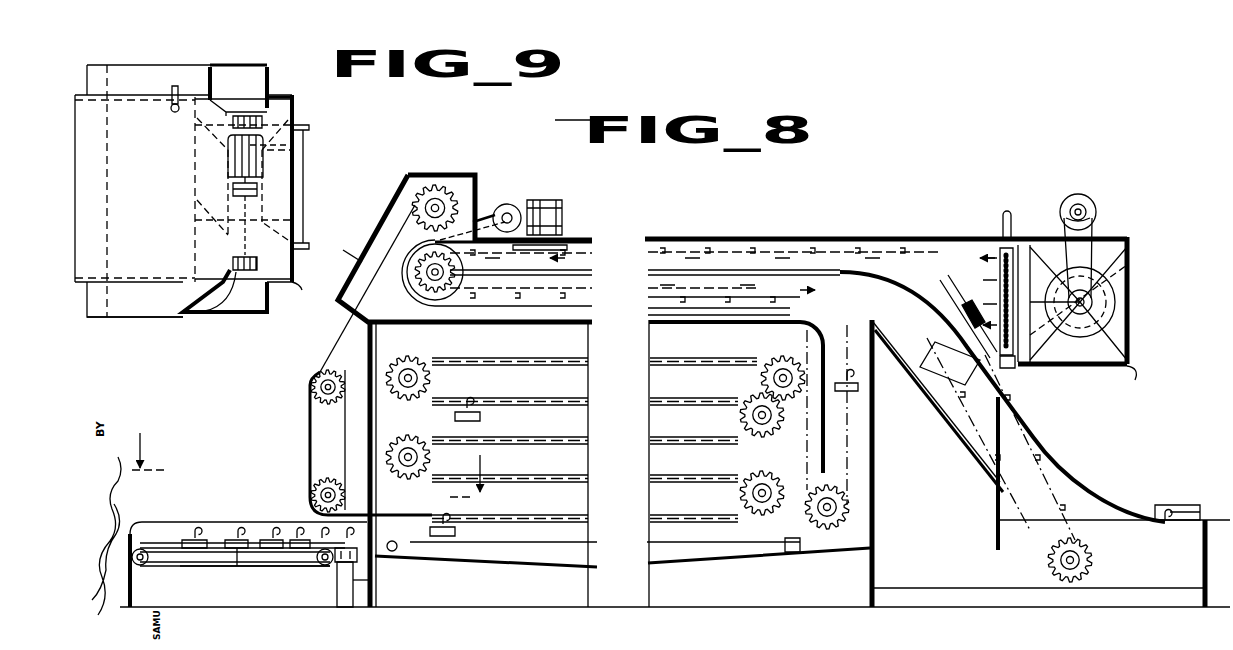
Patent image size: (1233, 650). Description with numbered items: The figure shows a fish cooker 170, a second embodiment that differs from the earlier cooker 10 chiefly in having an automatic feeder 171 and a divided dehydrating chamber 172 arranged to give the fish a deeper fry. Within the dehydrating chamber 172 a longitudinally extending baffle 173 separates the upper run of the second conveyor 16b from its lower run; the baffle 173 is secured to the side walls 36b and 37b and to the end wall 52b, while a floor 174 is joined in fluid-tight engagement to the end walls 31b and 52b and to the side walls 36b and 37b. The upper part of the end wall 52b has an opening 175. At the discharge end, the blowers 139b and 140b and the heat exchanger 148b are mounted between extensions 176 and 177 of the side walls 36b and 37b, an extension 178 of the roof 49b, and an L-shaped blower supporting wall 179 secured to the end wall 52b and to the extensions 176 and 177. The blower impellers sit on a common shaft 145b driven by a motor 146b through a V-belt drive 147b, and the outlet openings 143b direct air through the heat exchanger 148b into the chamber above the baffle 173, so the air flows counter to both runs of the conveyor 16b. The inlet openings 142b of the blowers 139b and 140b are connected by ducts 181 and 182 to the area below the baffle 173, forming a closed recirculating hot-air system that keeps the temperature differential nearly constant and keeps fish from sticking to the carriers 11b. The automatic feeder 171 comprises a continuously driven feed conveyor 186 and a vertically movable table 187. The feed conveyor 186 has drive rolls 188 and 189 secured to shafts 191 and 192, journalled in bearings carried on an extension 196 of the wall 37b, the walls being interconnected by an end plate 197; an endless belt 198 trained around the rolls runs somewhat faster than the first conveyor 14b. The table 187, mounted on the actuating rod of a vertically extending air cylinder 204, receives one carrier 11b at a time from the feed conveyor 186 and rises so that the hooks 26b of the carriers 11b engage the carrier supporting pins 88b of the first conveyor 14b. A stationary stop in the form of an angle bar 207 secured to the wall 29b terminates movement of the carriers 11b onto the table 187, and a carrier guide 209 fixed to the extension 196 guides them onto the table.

In FIG. 8, the fish cooker 170 is at (832, 203).
In FIG. 8, the dehydrating chamber 172 is at (737, 256).
In FIG. 8, the second conveyor 16b is at (780, 252).
In FIG. 9, the roof 49b is at (134, 160).
In FIG. 8, the roof 49b is at (858, 240).
In FIG. 8, the opening 175 is at (1003, 245).
In FIG. 8, the heat exchanger 148b is at (1016, 255).
In FIG. 9, the motor 146b is at (228, 137).
In FIG. 8, the motor 146b is at (1083, 200).
In FIG. 9, the extension of the roof 178 is at (212, 190).
In FIG. 8, the extension of the roof 178 is at (1110, 237).
In FIG. 9, the V-belt drive 147b is at (260, 188).
In FIG. 8, the V-belt drive 147b is at (1092, 258).
In FIG. 9, the blower 140b is at (292, 147).
In FIG. 8, the blower 140b is at (1105, 290).
In FIG. 9, the common shaft 145b is at (292, 204).
In FIG. 8, the common shaft 145b is at (1072, 300).
In FIG. 8, the outlet openings 143b is at (1015, 368).
In FIG. 9, the L-shaped blower supporting wall 179 is at (290, 283).
In FIG. 8, the L-shaped blower supporting wall 179 is at (1110, 380).
In FIG. 9, the side wall 37b is at (148, 102).
In FIG. 8, the side wall 37b is at (548, 347).
In FIG. 8, the carriers 11b is at (1195, 505).
In FIG. 8, the baffle 173 is at (578, 272).
In FIG. 8, the first conveyor 14b is at (550, 470).
In FIG. 8, the carrier supporting pins 88b is at (310, 445).
In FIG. 8, the hooks 26b is at (1160, 522).
In FIG. 8, the wall 29b is at (370, 433).
In FIG. 8, the cooker 10 is at (306, 465).
In FIG. 8, the automatic feeder 171 is at (182, 512).
In FIG. 8, the end plate 197 is at (133, 524).
In FIG. 8, the carrier guide 209 is at (242, 536).
In FIG. 8, the drive roll 189 is at (145, 560).
In FIG. 8, the shaft 192 is at (140, 566).
In FIG. 8, the extension 196 is at (234, 603).
In FIG. 8, the feed conveyor 186 is at (238, 570).
In FIG. 8, the endless belt 198 is at (232, 568).
In FIG. 8, the drive roll 188 is at (325, 562).
In FIG. 8, the drive shaft 191 is at (330, 565).
In FIG. 8, the vertically movable table 187 is at (360, 547).
In FIG. 8, the angle bar 207 is at (356, 566).
In FIG. 8, the air cylinder 204 is at (356, 590).
In FIG. 8, the floor 174 is at (965, 440).
In FIG. 8, the end wall 31b is at (945, 476).
In FIG. 8, the end wall 52b is at (996, 495).
In FIG. 9, the duct 182 is at (246, 66).
In FIG. 9, the inlet openings 142b is at (238, 283).
In FIG. 9, the extension of side wall 177 is at (286, 94).
In FIG. 9, the blower 139b is at (288, 224).
In FIG. 9, the side wall 36b is at (110, 280).
In FIG. 9, the extension of side wall 176 is at (280, 288).
In FIG. 9, the duct 181 is at (184, 315).